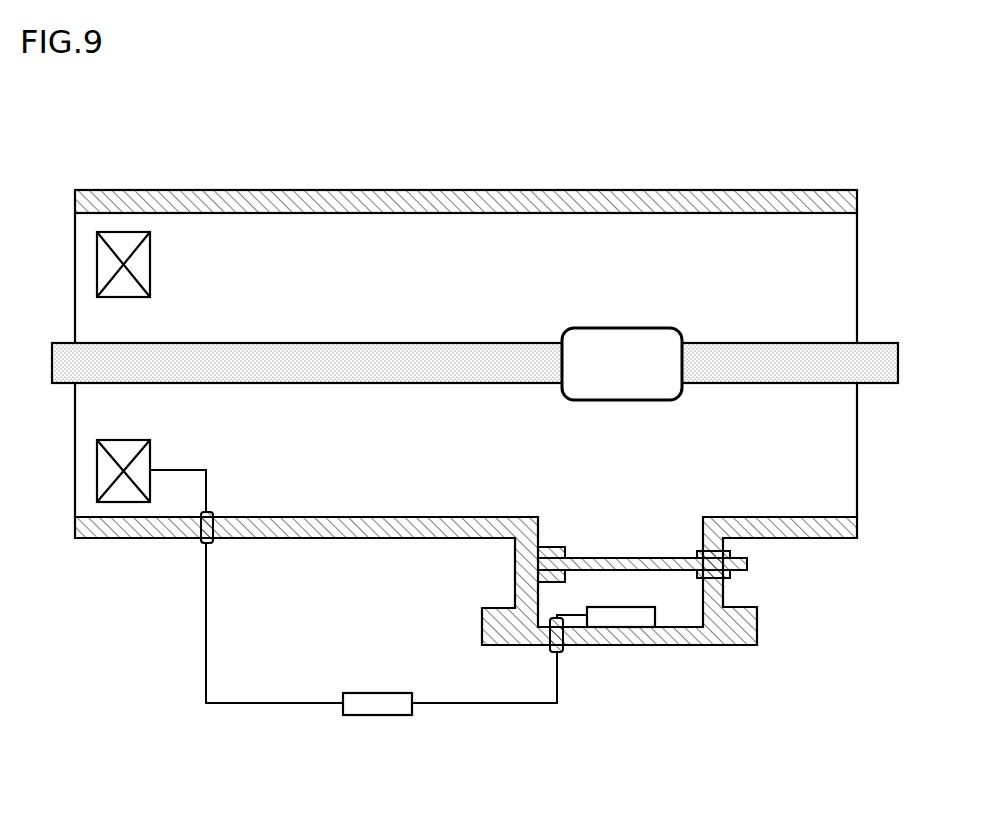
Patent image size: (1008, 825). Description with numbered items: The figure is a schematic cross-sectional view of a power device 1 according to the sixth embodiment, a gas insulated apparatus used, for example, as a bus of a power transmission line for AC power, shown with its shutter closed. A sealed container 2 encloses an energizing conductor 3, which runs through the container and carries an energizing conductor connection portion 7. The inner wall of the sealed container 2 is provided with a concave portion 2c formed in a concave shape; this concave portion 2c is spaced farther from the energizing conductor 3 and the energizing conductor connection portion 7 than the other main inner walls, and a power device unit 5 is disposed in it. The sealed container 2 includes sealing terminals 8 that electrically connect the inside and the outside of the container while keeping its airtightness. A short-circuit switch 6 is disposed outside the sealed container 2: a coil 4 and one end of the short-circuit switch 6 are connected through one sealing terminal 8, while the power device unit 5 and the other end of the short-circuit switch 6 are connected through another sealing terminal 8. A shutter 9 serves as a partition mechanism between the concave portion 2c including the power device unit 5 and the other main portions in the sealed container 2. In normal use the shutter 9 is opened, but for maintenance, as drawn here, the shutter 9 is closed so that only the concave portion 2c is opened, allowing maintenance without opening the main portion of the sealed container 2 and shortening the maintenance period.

The power device 1 is at (834, 156).
The sealed container 2 is at (282, 190).
The concave portion 2c is at (612, 543).
The energizing conductor 3 is at (745, 343).
The coil 4 is at (125, 503).
The power device unit 5 is at (633, 618).
The short-circuit switch 6 is at (375, 708).
The energizing conductor connection portion 7 is at (612, 328).
The sealing terminal 8 is at (200, 545).
The shutter 9 is at (733, 567).